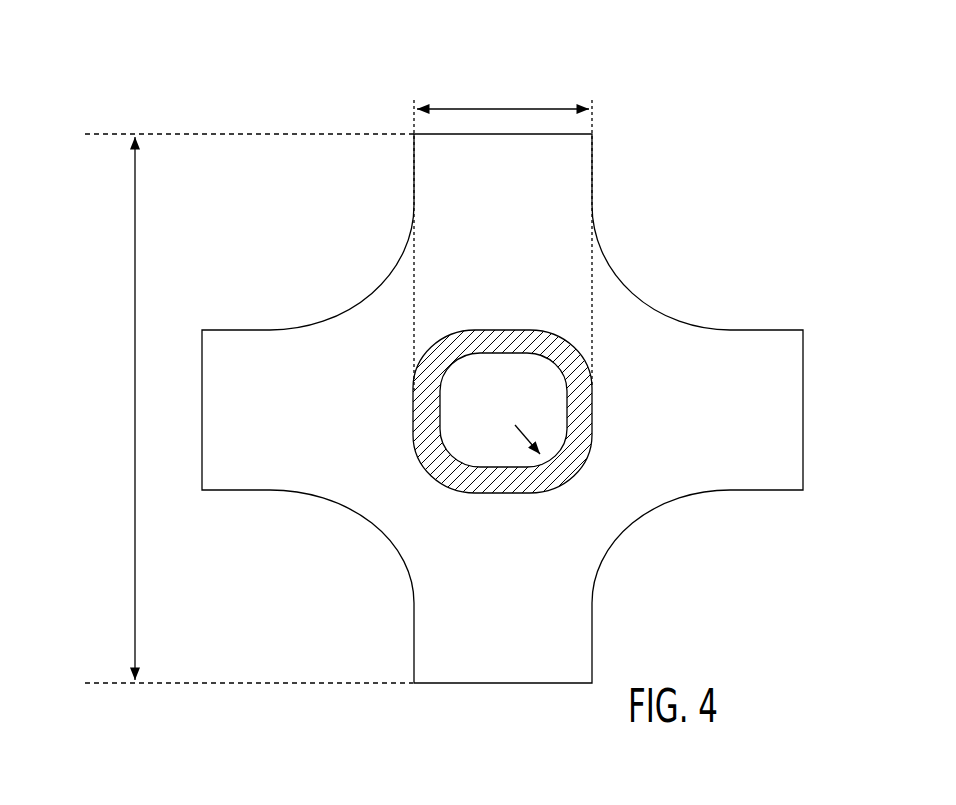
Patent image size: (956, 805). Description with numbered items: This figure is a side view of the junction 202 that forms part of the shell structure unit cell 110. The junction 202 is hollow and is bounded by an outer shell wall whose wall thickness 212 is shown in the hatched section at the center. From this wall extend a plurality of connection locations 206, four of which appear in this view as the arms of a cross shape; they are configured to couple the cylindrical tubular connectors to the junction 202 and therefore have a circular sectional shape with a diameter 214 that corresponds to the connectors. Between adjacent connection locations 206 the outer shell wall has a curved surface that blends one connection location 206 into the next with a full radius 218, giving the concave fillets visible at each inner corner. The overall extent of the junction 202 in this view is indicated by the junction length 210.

The shell structure unit cell 110 is at (391, 65).
The junction 202 is at (366, 312).
The connection locations 206 is at (427, 152).
The junction length 210 is at (135, 412).
The wall thickness 212 is at (561, 491).
The diameter 214 is at (495, 107).
The full radius 218 is at (642, 282).